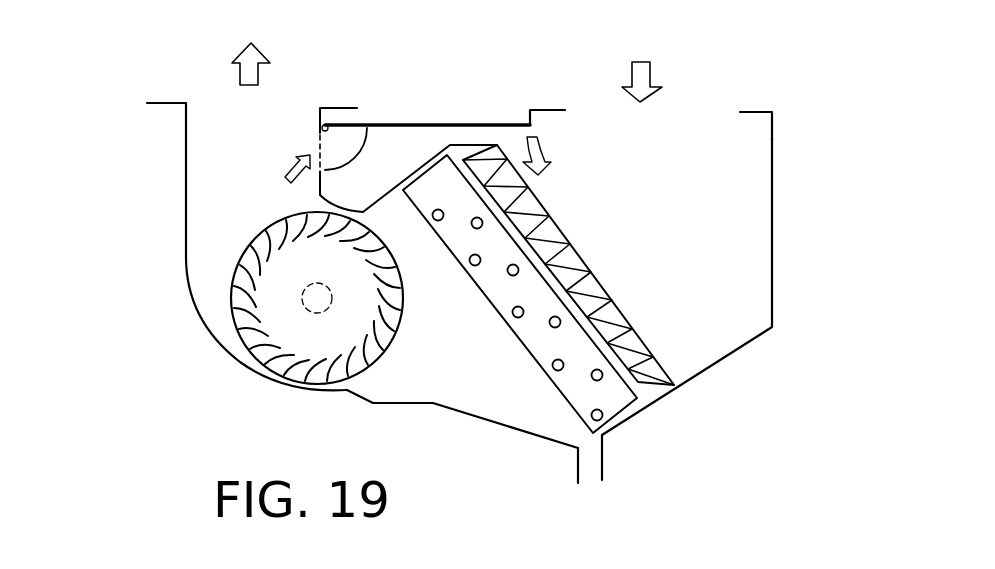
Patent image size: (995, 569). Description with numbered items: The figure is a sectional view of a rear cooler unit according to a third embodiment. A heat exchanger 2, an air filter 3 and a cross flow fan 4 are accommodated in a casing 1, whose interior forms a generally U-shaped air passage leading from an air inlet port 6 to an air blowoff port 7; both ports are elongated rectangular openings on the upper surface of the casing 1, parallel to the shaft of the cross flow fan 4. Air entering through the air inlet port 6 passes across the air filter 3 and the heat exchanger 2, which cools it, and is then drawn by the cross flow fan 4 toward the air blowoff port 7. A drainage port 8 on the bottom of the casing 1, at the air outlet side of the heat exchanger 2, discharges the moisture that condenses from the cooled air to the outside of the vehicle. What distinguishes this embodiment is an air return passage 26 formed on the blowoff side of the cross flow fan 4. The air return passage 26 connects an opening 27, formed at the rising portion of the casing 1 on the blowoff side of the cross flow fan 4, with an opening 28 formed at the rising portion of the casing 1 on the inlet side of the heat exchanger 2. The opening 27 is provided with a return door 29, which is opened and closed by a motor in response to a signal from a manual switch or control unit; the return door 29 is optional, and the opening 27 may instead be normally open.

The casing 1 is at (770, 213).
The heat exchanger 2 is at (562, 395).
The air filter 3 is at (657, 366).
The cross flow fan 4 is at (267, 371).
The air inlet port 6 is at (702, 112).
The air blowoff port 7 is at (220, 118).
The drainage port 8 is at (602, 457).
The air return passage 26 is at (425, 132).
The opening 27 is at (313, 148).
The opening 28 is at (510, 133).
The return door 29 is at (358, 126).